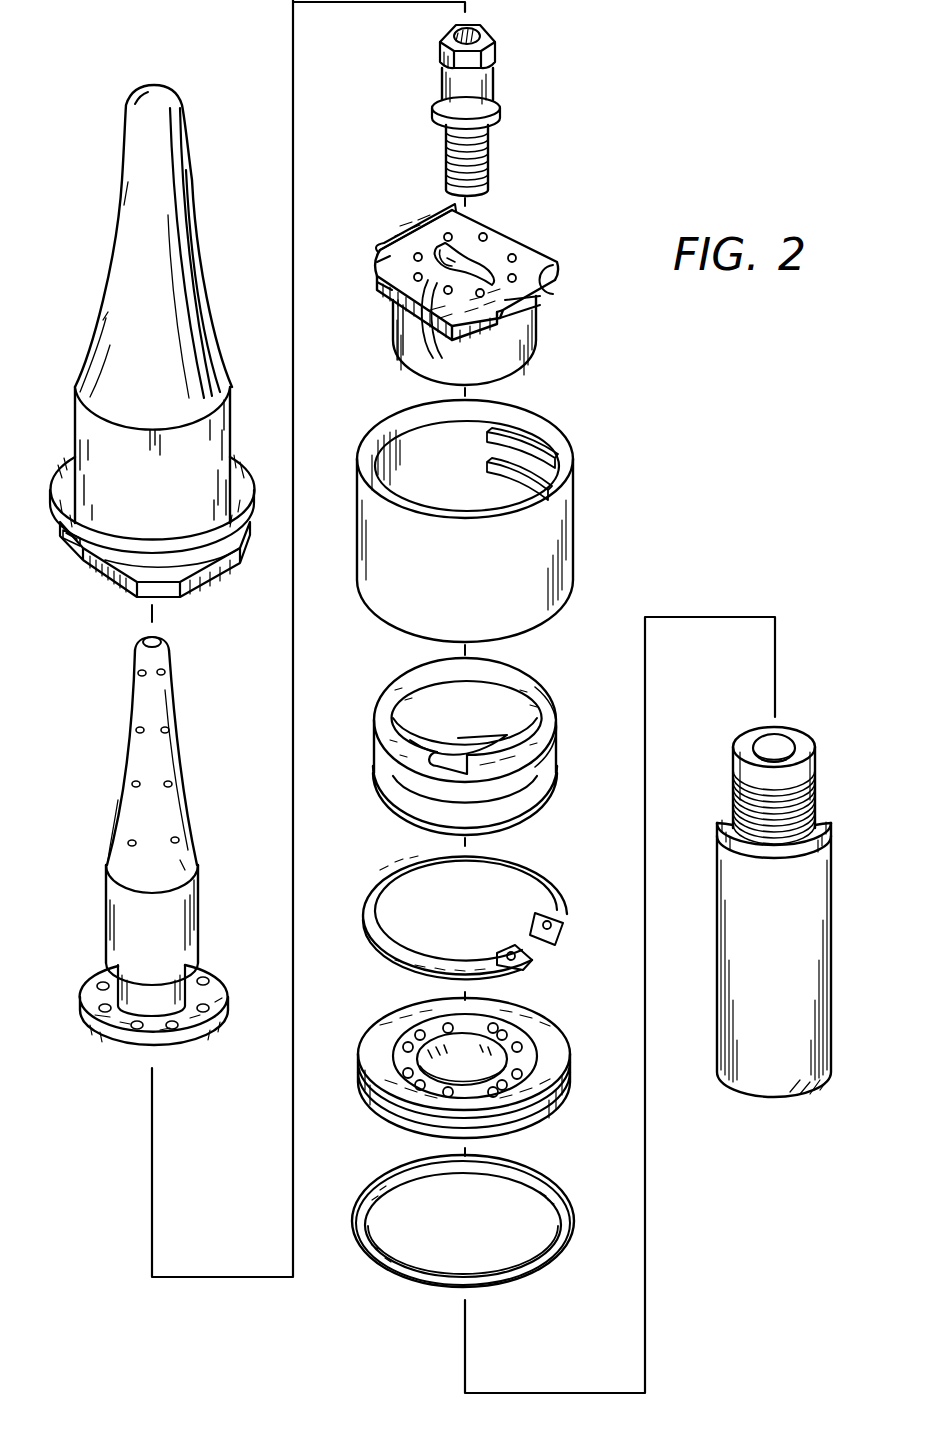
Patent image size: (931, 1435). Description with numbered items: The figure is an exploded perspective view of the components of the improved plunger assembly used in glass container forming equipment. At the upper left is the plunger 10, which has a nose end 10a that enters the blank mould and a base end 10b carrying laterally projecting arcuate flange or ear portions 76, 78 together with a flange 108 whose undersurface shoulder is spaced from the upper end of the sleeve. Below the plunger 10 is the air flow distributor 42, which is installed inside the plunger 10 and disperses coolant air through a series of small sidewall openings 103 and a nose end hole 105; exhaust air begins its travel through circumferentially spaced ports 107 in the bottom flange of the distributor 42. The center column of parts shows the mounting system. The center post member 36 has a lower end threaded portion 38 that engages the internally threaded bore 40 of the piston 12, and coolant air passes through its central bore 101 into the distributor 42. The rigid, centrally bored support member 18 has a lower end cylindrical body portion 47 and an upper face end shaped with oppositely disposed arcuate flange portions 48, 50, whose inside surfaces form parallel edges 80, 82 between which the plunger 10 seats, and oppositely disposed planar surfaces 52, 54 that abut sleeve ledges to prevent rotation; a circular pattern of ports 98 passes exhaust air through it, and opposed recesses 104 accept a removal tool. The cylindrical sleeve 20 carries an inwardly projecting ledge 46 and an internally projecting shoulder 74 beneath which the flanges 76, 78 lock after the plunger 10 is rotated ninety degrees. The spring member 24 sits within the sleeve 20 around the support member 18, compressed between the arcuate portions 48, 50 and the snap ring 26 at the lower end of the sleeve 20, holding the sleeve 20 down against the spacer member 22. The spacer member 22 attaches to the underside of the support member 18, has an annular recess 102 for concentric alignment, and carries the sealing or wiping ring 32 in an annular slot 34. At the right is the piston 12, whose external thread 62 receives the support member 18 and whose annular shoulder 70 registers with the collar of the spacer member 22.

The plunger 10 is at (140, 198).
The nose end 10a is at (160, 92).
The base end 10b is at (95, 560).
The piston 12 is at (790, 945).
The support member 18 is at (390, 265).
The cylindrical sleeve 20 is at (440, 582).
The spacer member 22 is at (380, 1050).
The spring member 24 is at (548, 712).
The snap ring 26 is at (370, 906).
The sealing or wiping ring 32 is at (560, 1210).
The annular slot 34 is at (500, 1128).
The center post member 36 is at (490, 98).
The lower end threaded portion 38 is at (460, 166).
The internally threaded bore 40 is at (778, 745).
The air flow distributor 42 is at (160, 770).
The ledge 46 is at (496, 476).
The lower end cylindrical body portion 47 is at (497, 353).
The arcuate flange portion 48 is at (400, 222).
The arcuate flange portion 50 is at (540, 297).
The planar surface 52 is at (385, 298).
The planar surface 54 is at (552, 242).
The external thread 62 is at (816, 773).
The annular shoulder 70 is at (830, 823).
The shoulder 74 is at (498, 436).
The flange or ear portion 76 is at (62, 536).
The flange or ear portion 78 is at (172, 580).
The parallel edge 80 is at (375, 253).
The parallel edge 82 is at (546, 266).
The ports 98 is at (490, 233).
The central bore 101 is at (469, 33).
The annular recess 102 is at (388, 1067).
The sidewall openings 103 is at (140, 732).
The recesses 104 is at (397, 348).
The nose end hole 105 is at (160, 643).
The ports 107 is at (98, 997).
The flange 108 is at (70, 456).